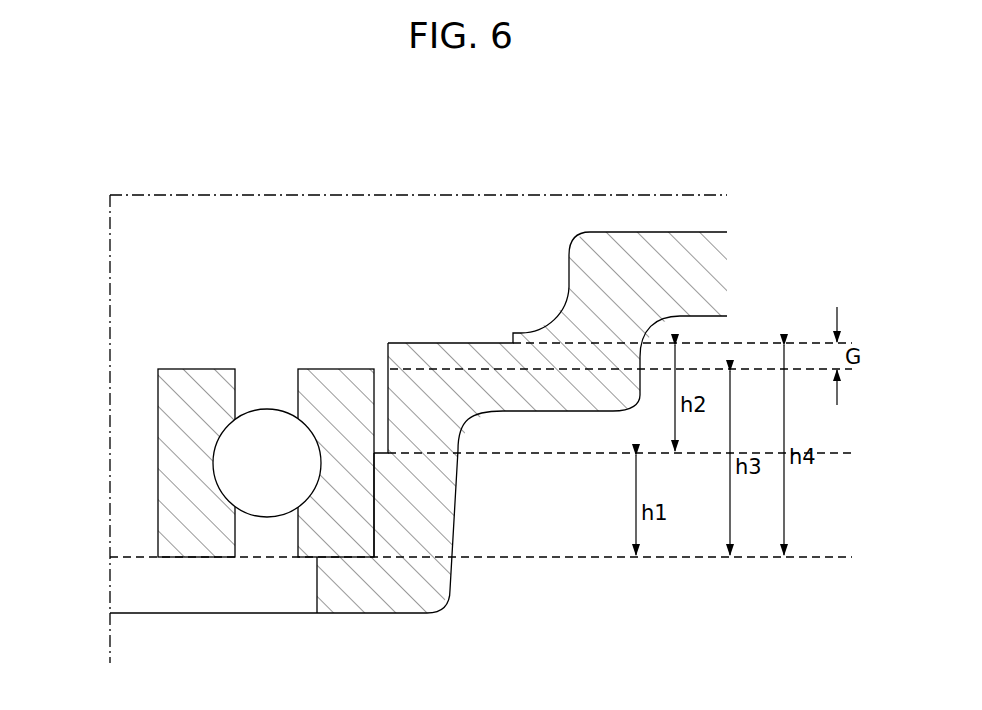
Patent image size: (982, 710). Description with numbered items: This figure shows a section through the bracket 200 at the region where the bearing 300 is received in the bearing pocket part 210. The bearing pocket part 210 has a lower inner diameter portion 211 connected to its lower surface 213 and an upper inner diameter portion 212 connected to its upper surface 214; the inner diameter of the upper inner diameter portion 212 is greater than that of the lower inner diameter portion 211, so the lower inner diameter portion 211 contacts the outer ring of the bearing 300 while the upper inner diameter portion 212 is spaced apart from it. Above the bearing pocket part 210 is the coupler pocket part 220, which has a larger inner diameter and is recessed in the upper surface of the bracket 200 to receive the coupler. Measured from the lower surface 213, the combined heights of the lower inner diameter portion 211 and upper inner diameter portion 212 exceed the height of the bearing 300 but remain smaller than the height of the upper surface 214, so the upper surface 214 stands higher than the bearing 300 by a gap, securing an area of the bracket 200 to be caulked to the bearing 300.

The bracket 200 is at (718, 256).
The bearing pocket part 210 is at (430, 406).
The lower inner diameter portion 211 is at (385, 505).
The upper inner diameter portion 212 is at (405, 385).
The lower surface 213 is at (355, 558).
The upper surface 214 is at (456, 341).
The coupler pocket part 220 is at (569, 254).
The bearing 300 is at (175, 413).